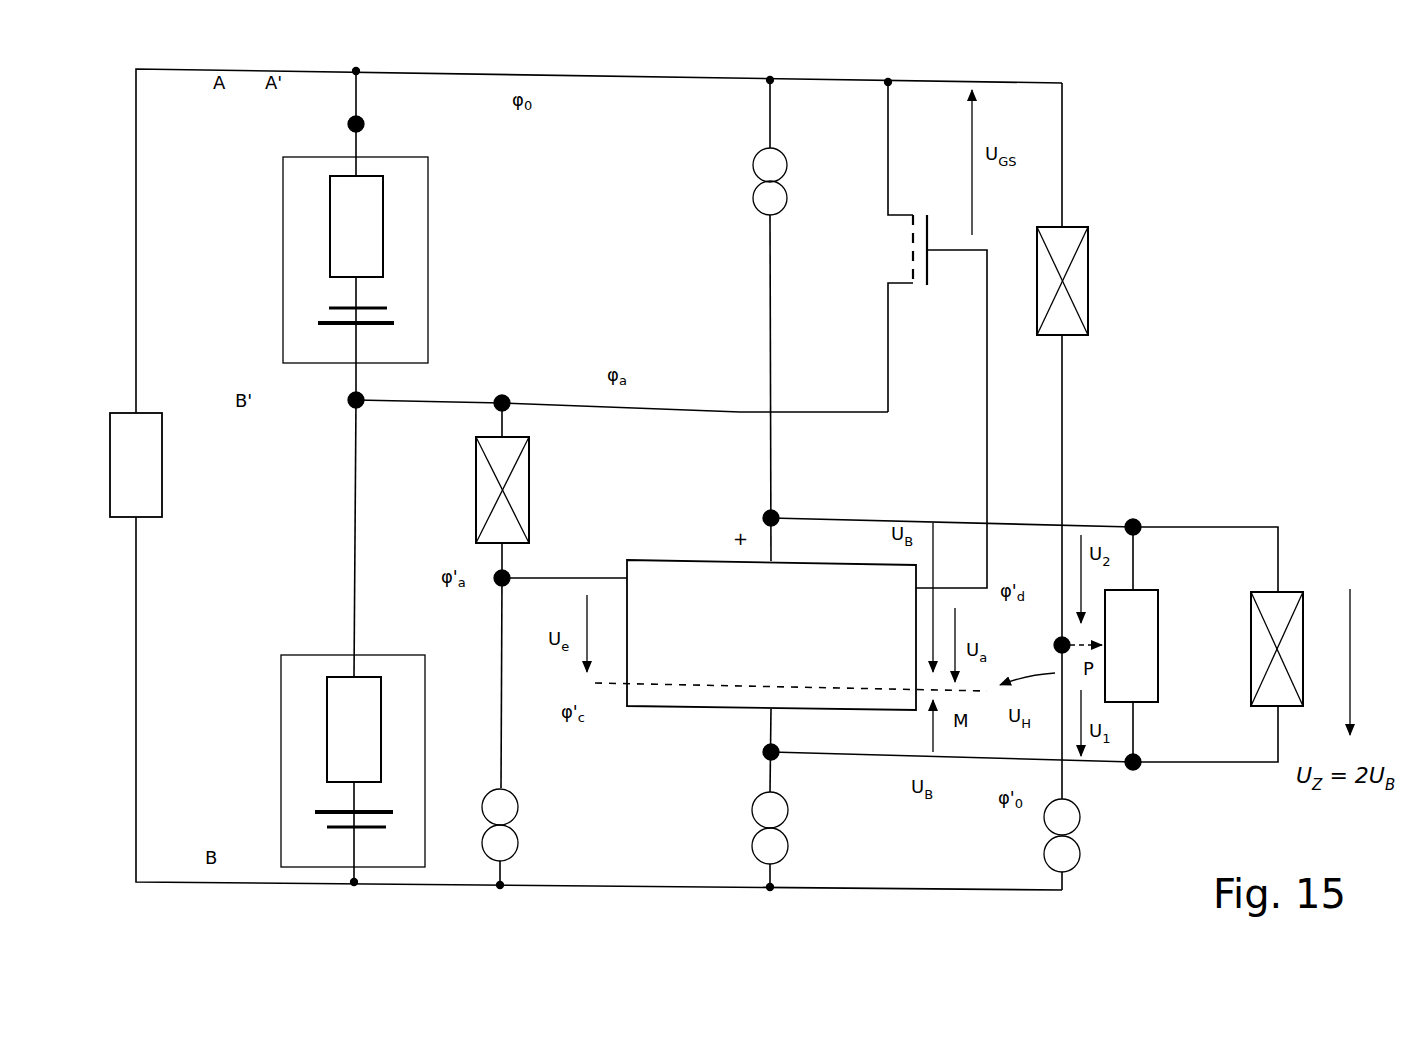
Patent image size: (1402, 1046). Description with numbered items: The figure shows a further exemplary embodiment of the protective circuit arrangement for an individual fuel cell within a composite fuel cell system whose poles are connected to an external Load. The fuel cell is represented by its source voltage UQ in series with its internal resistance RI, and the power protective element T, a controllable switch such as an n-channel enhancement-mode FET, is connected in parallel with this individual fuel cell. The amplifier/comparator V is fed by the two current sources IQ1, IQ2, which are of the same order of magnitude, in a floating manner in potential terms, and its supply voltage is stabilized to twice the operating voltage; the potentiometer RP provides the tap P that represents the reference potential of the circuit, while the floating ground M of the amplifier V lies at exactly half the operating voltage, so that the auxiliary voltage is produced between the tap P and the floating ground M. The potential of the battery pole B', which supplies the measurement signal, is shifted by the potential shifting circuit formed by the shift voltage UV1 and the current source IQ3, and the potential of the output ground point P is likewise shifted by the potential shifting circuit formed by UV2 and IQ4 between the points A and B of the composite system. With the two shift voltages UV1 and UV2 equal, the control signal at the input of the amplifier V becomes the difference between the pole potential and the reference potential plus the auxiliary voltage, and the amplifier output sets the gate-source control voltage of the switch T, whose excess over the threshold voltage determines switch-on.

The load Load is at (155, 482).
The internal resistance of voltage source RI is at (307, 226).
The source voltage UQ is at (313, 314).
The potential shifting circuit shift voltage UV1 is at (545, 447).
The potential shifting circuit shift voltage UV2 is at (1113, 232).
The current source IQ1 is at (807, 160).
The current source IQ2 is at (807, 803).
The current source IQ3 is at (537, 797).
The current source IQ4 is at (1098, 811).
The power protective element T is at (918, 335).
The amplifier/comparator V is at (771, 635).
The potentiometer resistor RP is at (1147, 644).